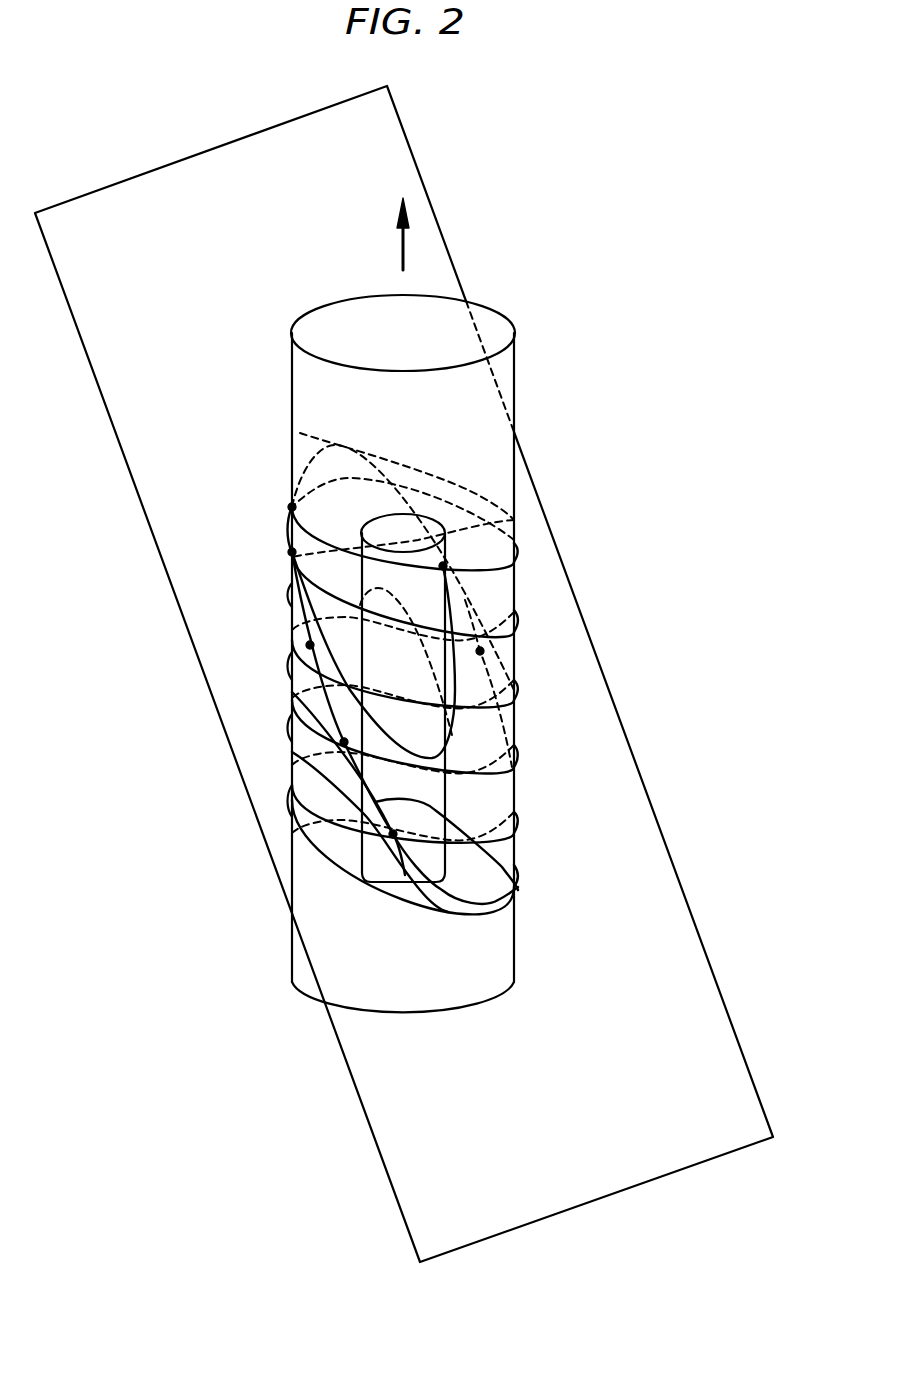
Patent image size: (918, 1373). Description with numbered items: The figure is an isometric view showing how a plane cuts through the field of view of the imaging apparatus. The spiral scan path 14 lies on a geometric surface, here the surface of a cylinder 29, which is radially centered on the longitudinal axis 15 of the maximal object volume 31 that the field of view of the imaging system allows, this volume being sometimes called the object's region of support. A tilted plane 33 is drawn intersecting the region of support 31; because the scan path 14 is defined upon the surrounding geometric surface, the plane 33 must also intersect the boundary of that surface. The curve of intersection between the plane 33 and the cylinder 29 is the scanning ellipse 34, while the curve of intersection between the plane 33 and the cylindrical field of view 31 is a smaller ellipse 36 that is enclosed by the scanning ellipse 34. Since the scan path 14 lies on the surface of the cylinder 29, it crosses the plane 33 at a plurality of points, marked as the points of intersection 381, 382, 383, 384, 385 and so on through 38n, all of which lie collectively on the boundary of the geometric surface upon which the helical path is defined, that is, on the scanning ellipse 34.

The spiral scan path 14 is at (292, 507).
The longitudinal axis 15 is at (403, 250).
The cylinder 29 is at (514, 368).
The maximal object volume 31 is at (447, 548).
The plane 33 is at (690, 905).
The scanning ellipse 34 is at (505, 850).
The ellipse 36 is at (292, 694).
The point of intersection 381 is at (292, 552).
The point of intersection 382 is at (443, 566).
The point of intersection 383 is at (310, 645).
The point of intersection 384 is at (480, 651).
The point of intersection 385 is at (344, 742).
The point of intersection 38n is at (393, 834).